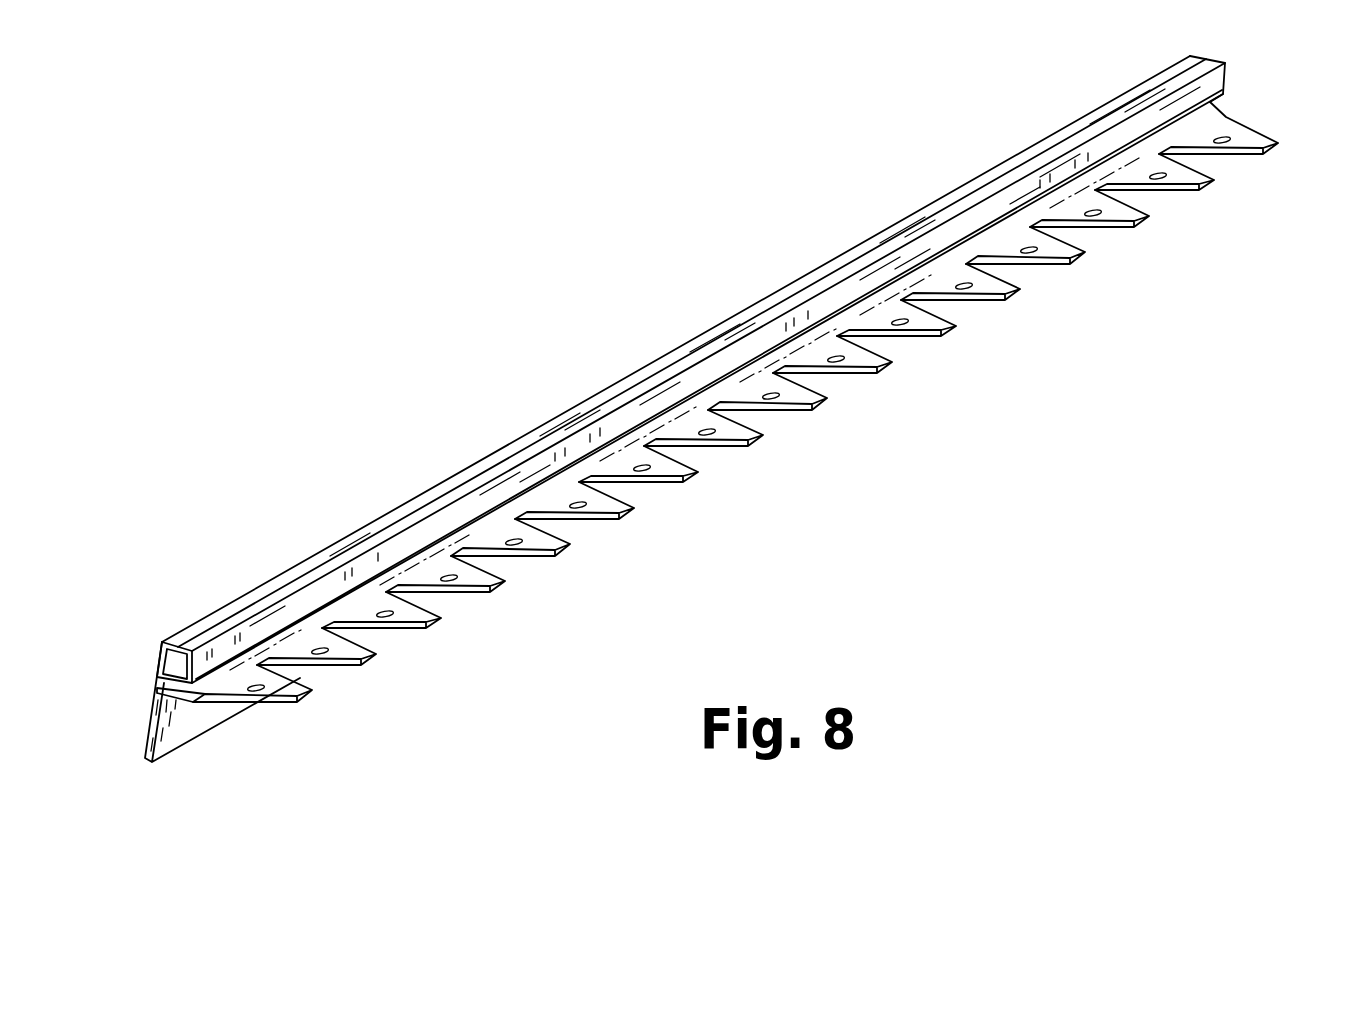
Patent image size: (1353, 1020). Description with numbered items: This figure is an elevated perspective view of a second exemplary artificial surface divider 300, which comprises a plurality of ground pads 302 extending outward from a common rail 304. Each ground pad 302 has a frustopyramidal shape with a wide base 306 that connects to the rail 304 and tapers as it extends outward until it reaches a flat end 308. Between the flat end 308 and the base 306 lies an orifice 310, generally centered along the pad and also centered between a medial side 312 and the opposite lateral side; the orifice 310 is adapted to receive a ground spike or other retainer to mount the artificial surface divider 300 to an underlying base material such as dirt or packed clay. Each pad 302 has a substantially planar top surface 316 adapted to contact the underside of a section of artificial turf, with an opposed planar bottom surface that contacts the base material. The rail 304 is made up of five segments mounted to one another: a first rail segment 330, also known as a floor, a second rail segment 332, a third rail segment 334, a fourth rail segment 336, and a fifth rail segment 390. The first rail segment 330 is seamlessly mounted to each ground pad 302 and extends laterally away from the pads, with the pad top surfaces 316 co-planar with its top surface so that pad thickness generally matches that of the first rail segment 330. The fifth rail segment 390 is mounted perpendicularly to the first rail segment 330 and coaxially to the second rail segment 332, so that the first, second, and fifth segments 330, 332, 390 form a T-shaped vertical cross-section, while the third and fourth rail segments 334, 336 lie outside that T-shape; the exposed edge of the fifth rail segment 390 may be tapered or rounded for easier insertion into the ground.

The artificial surface divider 300 is at (270, 128).
The ground pad 302 is at (1078, 246).
The rail 304 is at (158, 690).
The base 306 is at (430, 562).
The flat end 308 is at (442, 619).
The orifice 310 is at (966, 281).
The medial side 312 is at (592, 515).
The top surface 316 is at (348, 660).
The first rail segment 330 is at (197, 700).
The second rail segment 332 is at (157, 675).
The third rail segment 334 is at (728, 330).
The fourth rail segment 336 is at (1225, 93).
The fifth rail segment 390 is at (176, 740).